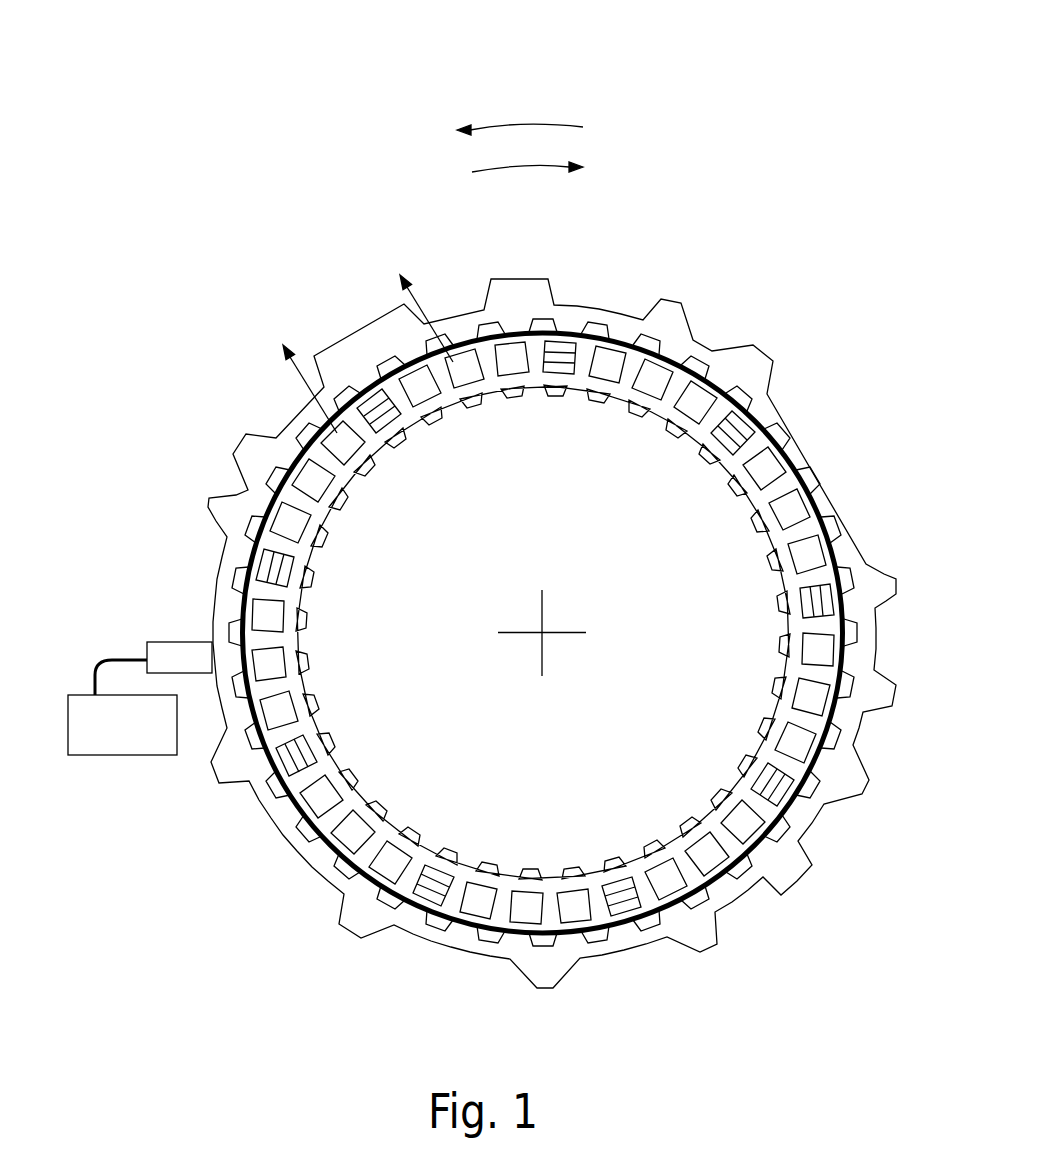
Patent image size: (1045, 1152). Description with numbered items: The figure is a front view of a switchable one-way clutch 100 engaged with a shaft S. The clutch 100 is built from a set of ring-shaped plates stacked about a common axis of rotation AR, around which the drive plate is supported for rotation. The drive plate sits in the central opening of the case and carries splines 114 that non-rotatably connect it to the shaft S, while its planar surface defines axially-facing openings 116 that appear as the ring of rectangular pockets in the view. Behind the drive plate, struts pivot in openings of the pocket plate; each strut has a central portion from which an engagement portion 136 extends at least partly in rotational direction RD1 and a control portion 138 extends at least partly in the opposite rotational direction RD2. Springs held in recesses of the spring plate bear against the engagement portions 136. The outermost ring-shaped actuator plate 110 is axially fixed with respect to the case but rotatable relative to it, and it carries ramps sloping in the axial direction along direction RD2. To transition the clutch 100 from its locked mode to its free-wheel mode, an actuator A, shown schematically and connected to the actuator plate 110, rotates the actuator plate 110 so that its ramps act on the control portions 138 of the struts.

The switchable one-way clutch 100 is at (720, 183).
The actuator plate 110 is at (178, 642).
The splines 114 is at (483, 867).
The axially-facing openings 116 is at (700, 400).
The engagement portion 136 is at (767, 467).
The control portion 138 is at (723, 413).
The axis of rotation AR is at (547, 650).
The rotational direction RD1 is at (530, 168).
The rotational direction RD2 is at (530, 122).
The shaft S is at (533, 677).
The actuator A is at (122, 725).